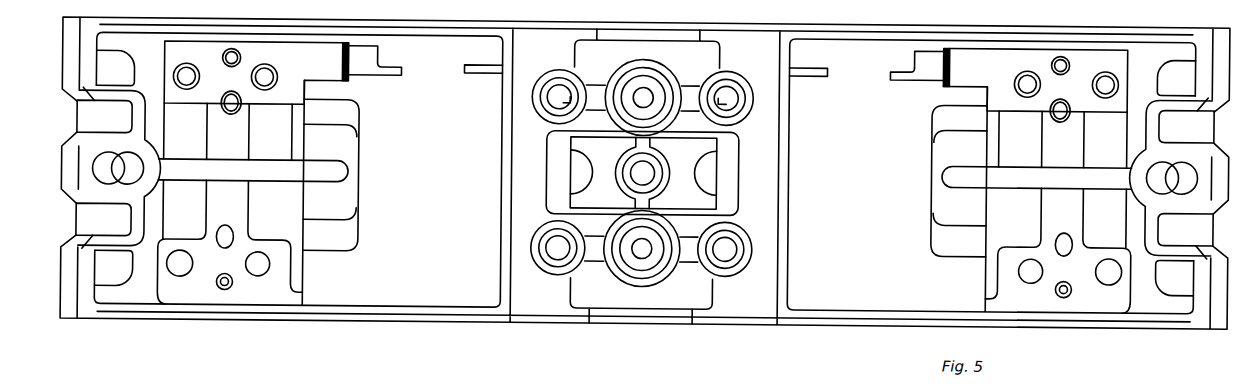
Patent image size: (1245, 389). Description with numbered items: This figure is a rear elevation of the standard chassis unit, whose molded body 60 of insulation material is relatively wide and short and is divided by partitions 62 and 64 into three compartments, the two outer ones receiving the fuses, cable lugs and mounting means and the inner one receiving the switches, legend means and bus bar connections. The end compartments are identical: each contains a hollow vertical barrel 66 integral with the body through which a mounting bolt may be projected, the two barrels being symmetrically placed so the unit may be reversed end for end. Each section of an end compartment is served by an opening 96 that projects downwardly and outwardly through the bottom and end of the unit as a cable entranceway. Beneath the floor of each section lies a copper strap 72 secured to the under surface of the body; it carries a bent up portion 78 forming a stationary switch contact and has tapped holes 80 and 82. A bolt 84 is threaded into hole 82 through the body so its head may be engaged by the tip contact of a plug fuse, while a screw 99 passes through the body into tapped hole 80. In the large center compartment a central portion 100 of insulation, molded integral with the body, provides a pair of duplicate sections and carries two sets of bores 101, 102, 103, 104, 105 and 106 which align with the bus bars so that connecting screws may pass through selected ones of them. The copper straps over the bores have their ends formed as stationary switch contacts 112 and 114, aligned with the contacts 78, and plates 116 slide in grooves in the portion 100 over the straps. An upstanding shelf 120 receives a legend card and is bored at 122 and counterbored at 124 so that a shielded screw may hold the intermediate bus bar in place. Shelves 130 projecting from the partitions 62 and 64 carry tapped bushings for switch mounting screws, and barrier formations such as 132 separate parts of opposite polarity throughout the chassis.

The molded body 60 is at (718, 17).
The partition 62 is at (306, 277).
The partition 64 is at (988, 279).
The hollow vertical barrel 66 is at (126, 170).
The second strap 72 is at (646, 76).
The bent up portion 78 is at (393, 73).
The tapped hole 80 is at (271, 85).
The tapped hole 82 is at (196, 85).
The bolt 84 is at (191, 58).
The opening 96 is at (644, 173).
The screw 99 is at (274, 66).
The central portion 100 is at (638, 176).
The bore 101 is at (553, 268).
The bore 102 is at (640, 268).
The bore 103 is at (738, 266).
The bore 104 is at (548, 80).
The bore 105 is at (638, 82).
The bore 106 is at (735, 75).
The strap end 112 is at (483, 70).
The strap end 114 is at (822, 70).
The plate 116 is at (567, 99).
The upstanding shelf 120 is at (642, 173).
The bore 122 is at (642, 173).
The counterbore 124 is at (663, 186).
The shelf 130 is at (645, 178).
The barrier formation 132 is at (1033, 143).